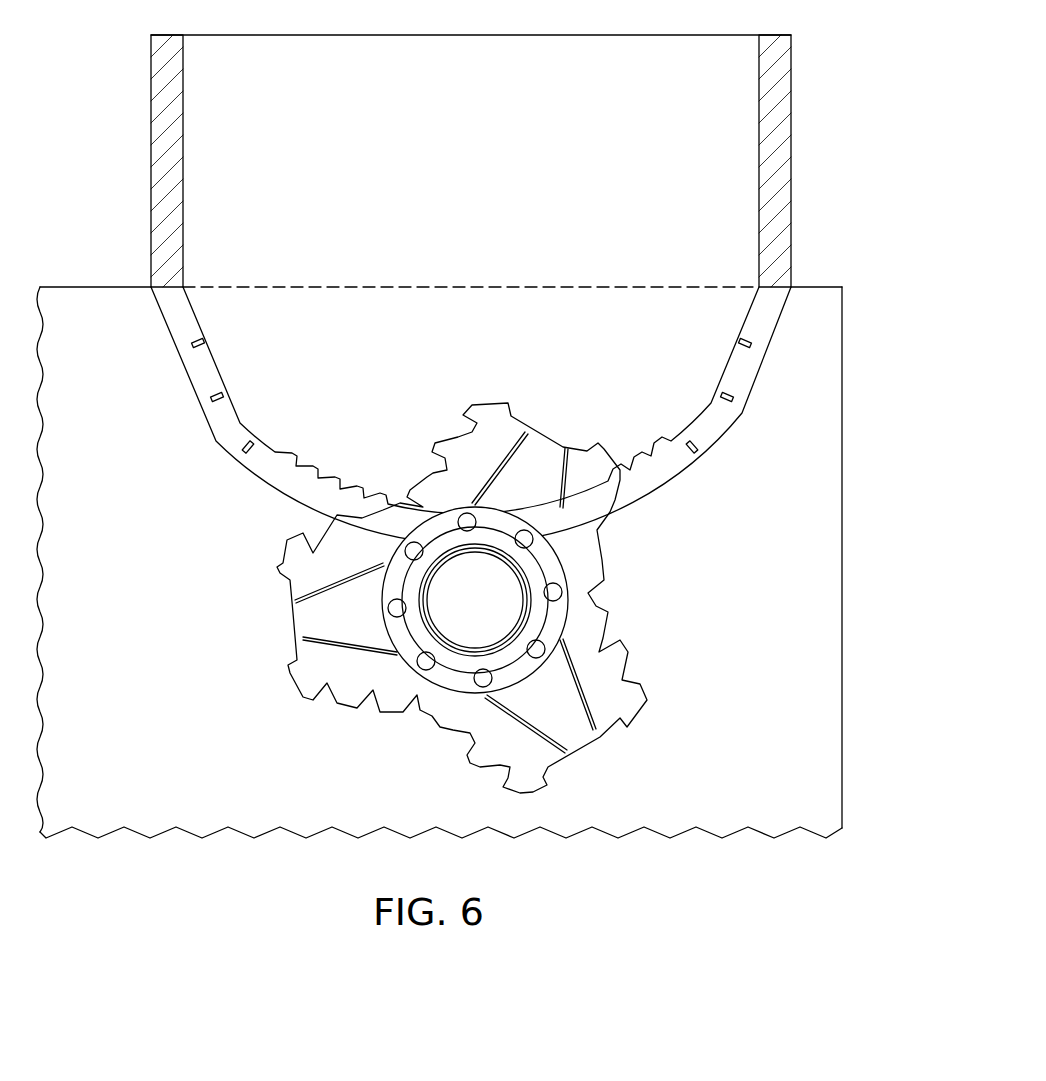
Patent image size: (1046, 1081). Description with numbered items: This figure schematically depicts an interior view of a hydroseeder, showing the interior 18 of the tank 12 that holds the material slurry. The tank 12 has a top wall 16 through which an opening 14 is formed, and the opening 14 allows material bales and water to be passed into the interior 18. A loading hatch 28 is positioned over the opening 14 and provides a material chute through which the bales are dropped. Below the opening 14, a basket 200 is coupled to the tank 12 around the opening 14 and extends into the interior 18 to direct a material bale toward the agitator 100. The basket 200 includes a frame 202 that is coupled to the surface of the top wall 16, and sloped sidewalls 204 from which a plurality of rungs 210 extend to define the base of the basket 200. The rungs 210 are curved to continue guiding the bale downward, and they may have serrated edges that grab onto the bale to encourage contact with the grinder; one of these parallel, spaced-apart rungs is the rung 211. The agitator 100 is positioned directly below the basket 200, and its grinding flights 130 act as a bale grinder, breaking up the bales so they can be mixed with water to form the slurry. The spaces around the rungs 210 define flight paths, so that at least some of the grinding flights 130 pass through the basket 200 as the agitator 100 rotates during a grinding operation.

The tank 12 is at (842, 785).
The opening 14 is at (606, 222).
The top wall 16 is at (77, 287).
The interior 18 is at (815, 588).
The loading hatch 28 is at (792, 74).
The agitator 100 is at (409, 612).
The grinding flights 130 is at (592, 748).
The basket 200 is at (465, 436).
The frame 202 is at (180, 355).
The sloped sidewalls 204 is at (191, 387).
The rungs 210 is at (271, 513).
The rung 211 is at (688, 477).